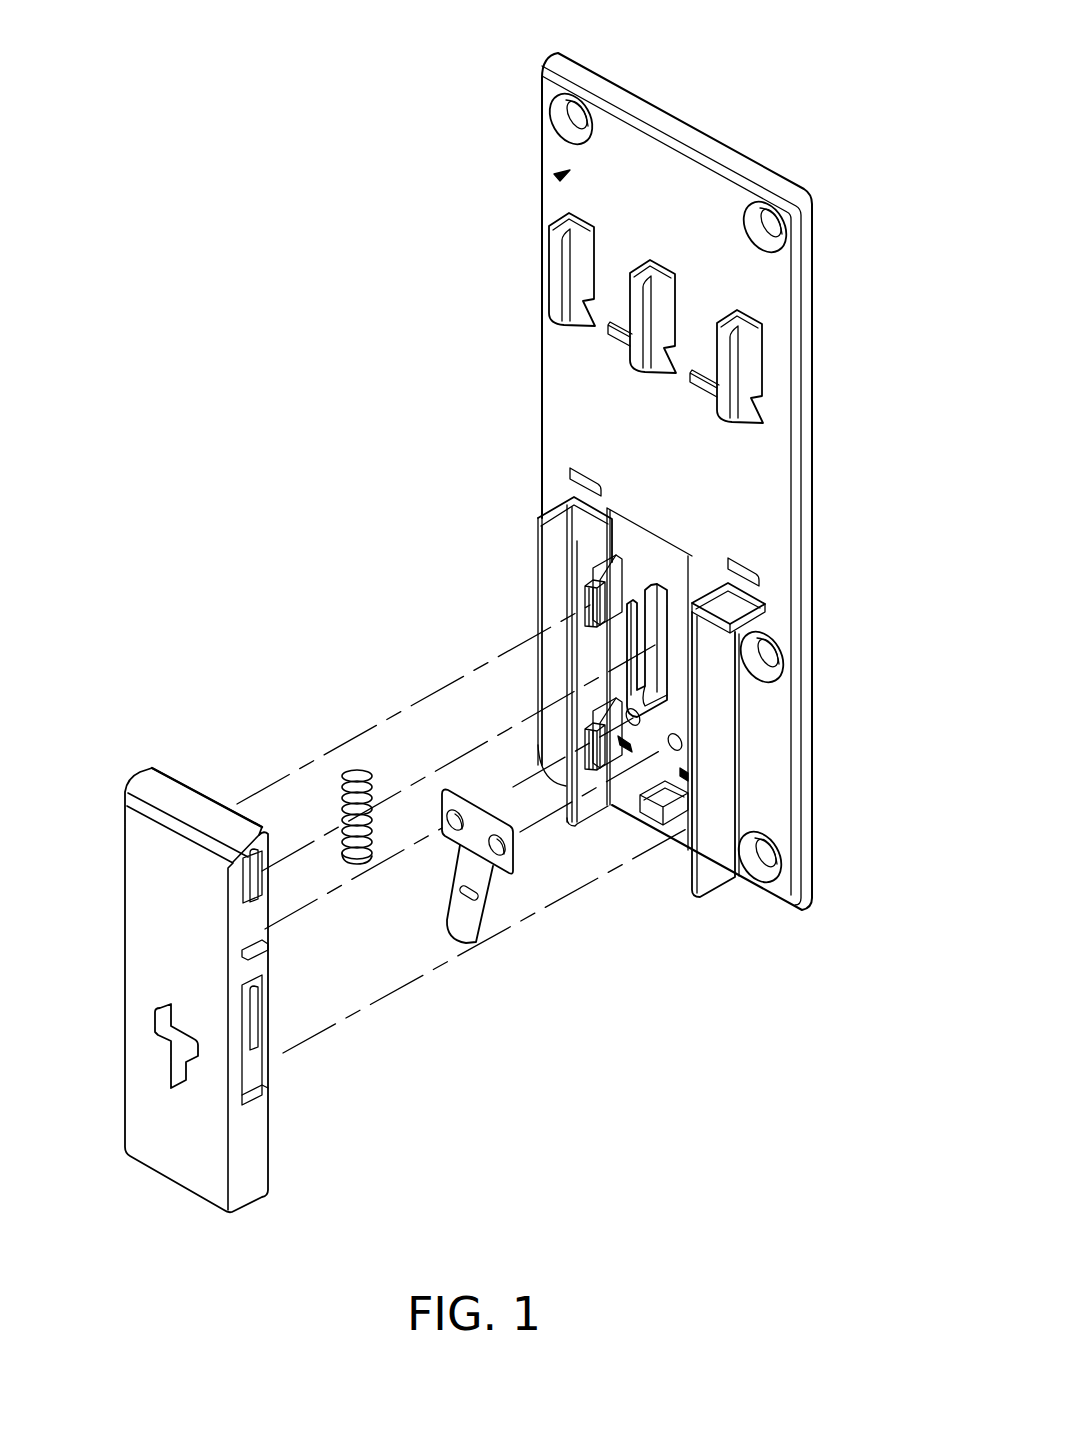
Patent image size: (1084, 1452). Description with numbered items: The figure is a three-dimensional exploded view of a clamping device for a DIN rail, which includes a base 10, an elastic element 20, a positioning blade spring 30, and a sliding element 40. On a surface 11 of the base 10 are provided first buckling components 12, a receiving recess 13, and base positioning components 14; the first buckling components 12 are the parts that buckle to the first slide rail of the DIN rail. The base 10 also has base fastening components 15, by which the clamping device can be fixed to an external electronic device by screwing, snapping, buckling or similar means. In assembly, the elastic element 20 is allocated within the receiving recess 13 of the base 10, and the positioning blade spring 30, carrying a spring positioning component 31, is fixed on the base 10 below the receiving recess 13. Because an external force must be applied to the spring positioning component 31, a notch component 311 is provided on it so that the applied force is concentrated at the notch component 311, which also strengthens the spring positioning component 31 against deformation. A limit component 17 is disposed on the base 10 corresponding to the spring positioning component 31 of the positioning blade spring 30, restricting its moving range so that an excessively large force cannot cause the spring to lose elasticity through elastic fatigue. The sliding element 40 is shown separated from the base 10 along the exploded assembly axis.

The base 10 is at (655, 105).
The surface of the base 11 is at (556, 177).
The first buckling component 12 is at (747, 358).
The receiving recess 13 is at (683, 602).
The base positioning component 14 is at (566, 603).
The base fastening component 15 is at (560, 118).
The limit component 17 is at (652, 816).
The elastic element 20 is at (351, 768).
The positioning blade spring 30 is at (528, 860).
The spring positioning component 31 is at (468, 919).
The notch component 311 is at (463, 888).
The sliding element 40 is at (212, 1177).